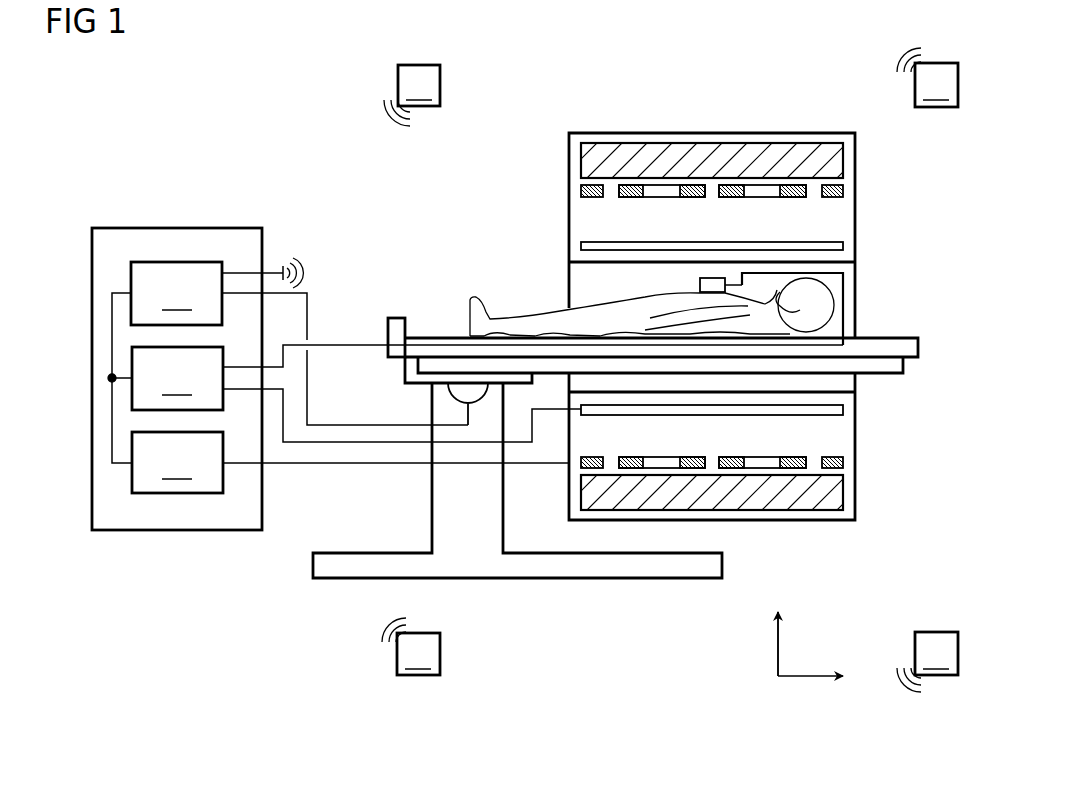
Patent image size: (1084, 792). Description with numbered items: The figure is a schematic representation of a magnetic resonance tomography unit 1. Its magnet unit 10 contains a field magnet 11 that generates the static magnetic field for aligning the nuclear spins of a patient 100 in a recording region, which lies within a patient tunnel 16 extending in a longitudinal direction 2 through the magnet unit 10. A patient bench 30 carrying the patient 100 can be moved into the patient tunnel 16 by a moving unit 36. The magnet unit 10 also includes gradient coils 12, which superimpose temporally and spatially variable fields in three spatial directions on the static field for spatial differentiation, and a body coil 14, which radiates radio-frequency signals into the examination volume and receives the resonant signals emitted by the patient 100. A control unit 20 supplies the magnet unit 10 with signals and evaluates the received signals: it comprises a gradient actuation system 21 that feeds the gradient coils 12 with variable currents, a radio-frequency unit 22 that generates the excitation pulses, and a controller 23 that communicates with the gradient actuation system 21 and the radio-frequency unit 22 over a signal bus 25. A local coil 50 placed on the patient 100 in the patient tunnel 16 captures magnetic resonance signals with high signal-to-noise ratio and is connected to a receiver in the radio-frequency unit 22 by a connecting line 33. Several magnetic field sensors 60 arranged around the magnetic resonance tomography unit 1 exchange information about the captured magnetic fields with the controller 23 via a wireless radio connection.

The magnetic resonance tomography unit 1 is at (518, 95).
The longitudinal direction 2 is at (805, 675).
The magnet unit 10 is at (824, 126).
The field magnet 11 is at (710, 155).
The gradient coils 12 is at (791, 185).
The body coil 14 is at (843, 246).
The patient tunnel 16 is at (872, 291).
The control unit 20 is at (248, 218).
The gradient actuation system 21 is at (351, 462).
The radio-frequency unit 22 is at (487, 393).
The controller 23 is at (299, 341).
The signal bus 25 is at (112, 335).
The patient bench 30 is at (548, 379).
The connecting line 33 is at (350, 345).
The moving unit 36 is at (432, 407).
The local coil 50 is at (708, 278).
The magnetic field sensors 60 is at (670, 370).
The patient 100 is at (497, 320).